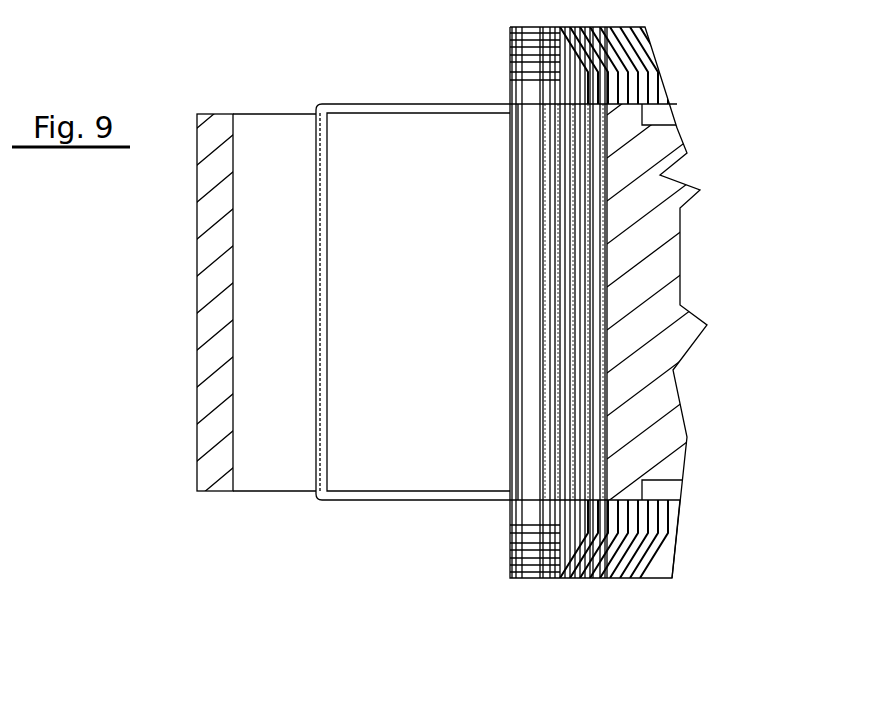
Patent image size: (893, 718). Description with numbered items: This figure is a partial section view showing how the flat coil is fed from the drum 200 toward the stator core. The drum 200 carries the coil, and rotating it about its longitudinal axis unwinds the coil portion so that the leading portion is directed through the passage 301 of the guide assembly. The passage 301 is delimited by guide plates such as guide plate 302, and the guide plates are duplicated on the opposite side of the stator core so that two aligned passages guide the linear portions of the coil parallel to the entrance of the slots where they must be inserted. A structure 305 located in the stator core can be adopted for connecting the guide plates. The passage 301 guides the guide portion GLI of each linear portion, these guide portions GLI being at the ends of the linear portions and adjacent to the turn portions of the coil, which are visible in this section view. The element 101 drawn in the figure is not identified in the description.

The first component / substrate 101 is at (200, 290).
The drum 200 is at (668, 215).
The passage 301 is at (500, 93).
The guide plate 302 is at (395, 110).
The structure 305 is at (322, 300).
The guide portion GLI is at (518, 112).